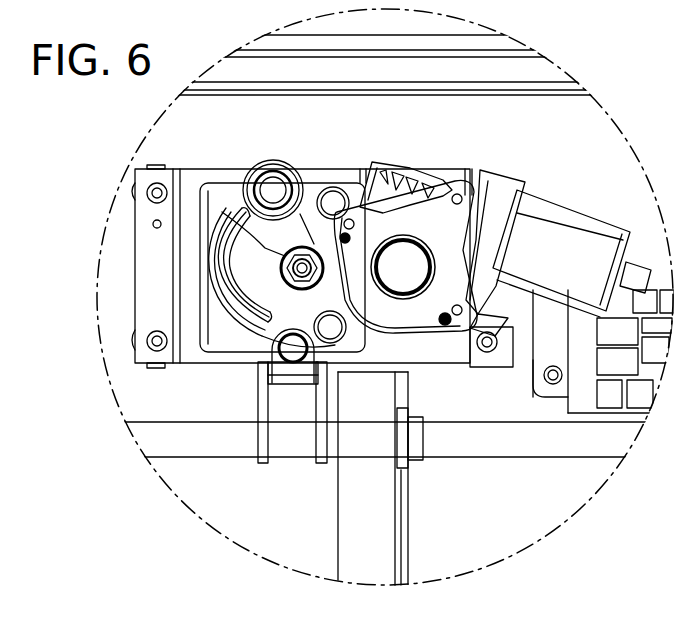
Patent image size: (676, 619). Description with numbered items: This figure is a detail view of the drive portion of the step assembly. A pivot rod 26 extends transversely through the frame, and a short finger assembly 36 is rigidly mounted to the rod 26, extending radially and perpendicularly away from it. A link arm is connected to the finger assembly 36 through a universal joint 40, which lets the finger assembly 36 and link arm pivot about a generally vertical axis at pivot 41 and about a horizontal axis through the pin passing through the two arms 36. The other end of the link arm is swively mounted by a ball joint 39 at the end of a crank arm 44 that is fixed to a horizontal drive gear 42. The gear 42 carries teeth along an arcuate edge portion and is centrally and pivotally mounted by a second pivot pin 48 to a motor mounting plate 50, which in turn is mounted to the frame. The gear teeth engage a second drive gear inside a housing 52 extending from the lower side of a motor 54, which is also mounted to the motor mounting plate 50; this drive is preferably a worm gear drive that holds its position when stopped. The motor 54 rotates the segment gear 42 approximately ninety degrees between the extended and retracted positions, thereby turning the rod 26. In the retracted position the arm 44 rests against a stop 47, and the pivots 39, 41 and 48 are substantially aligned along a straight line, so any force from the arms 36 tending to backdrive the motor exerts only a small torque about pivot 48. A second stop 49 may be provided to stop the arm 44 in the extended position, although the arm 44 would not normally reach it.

The pivot rod 26 is at (500, 437).
The finger assembly 36 is at (319, 455).
The ball joint 39 is at (276, 188).
The universal joint 40 is at (277, 388).
The pivot 41 is at (238, 356).
The drive gear 42 is at (334, 198).
The crank arm 44 is at (217, 250).
The stop 47 is at (330, 322).
The second pivot pin 48 is at (300, 270).
The second stop 49 is at (326, 180).
The motor mounting plate 50 is at (447, 177).
The housing 52 is at (480, 207).
The motor 54 is at (558, 207).